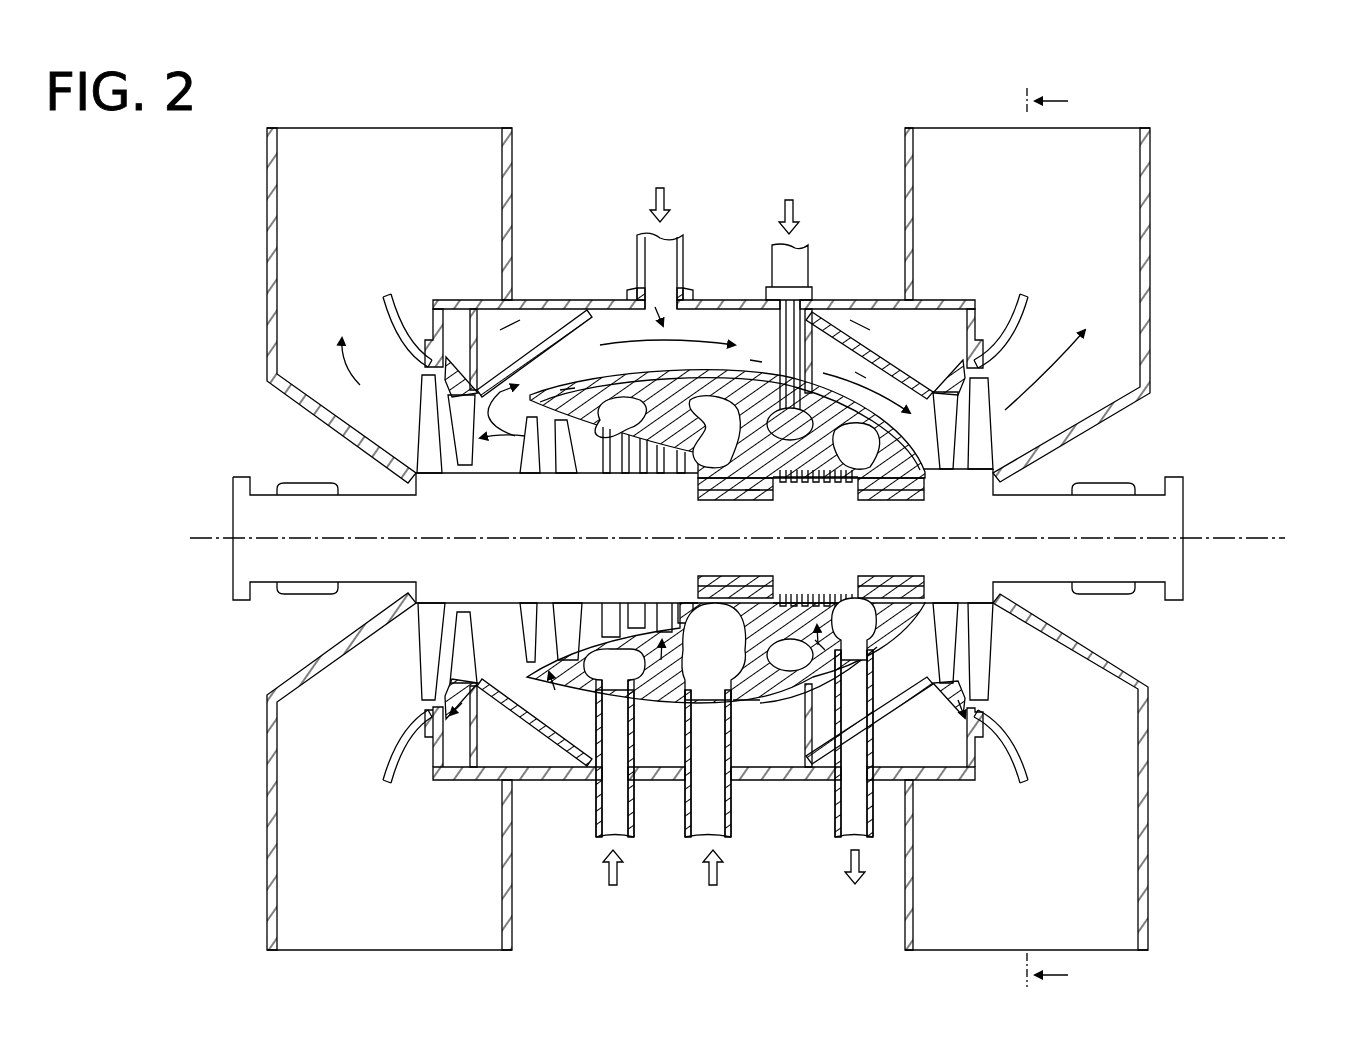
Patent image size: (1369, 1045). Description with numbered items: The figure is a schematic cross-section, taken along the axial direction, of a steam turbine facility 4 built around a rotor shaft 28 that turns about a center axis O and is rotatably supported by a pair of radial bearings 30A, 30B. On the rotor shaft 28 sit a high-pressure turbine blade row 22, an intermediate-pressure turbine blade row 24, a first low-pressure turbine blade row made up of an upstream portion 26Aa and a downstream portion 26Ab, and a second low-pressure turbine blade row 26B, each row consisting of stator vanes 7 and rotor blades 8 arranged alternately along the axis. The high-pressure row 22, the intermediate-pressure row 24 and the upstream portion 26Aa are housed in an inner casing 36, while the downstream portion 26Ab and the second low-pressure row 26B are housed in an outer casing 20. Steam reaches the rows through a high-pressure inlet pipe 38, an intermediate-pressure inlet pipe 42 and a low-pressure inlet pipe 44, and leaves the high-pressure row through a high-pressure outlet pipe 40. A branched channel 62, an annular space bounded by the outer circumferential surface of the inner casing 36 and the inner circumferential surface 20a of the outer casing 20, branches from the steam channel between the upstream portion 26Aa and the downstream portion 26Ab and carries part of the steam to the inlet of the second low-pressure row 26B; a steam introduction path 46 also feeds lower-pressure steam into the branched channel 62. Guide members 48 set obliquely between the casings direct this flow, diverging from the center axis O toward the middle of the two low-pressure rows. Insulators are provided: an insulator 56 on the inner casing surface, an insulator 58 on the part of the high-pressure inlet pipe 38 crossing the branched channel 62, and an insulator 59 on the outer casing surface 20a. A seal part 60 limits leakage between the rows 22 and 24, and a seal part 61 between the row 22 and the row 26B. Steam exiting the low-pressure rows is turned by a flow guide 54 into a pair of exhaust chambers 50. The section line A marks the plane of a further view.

The steam turbine facility 4 is at (1300, 142).
The stator vanes 7 is at (598, 420).
The rotor blades 8 is at (425, 420).
The outer casing 20 is at (548, 393).
The inner circumferential surface of the outer casing 20a is at (710, 305).
The high-pressure turbine blade row 22 is at (828, 635).
The intermediate-pressure turbine blade row 24 is at (661, 665).
The upstream portion of the first low-pressure turbine blade row 26Aa is at (548, 700).
The downstream portion of the first low-pressure turbine blade row 26Ab is at (470, 706).
The second low-pressure turbine blade row 26B is at (955, 712).
The rotor shaft 28 is at (1035, 590).
The radial bearing 30A is at (290, 484).
The radial bearing 30B is at (1110, 484).
The inner casing 36 is at (800, 645).
The high-pressure inlet pipe 38 is at (810, 268).
The high-pressure outlet pipe 40 is at (873, 790).
The intermediate-pressure inlet pipe 42 is at (733, 790).
The low-pressure inlet pipe 44 is at (637, 780).
The steam introduction path 46 is at (690, 255).
The guide members 48 is at (522, 380).
The exhaust chambers 50 is at (302, 124).
The flow guide 54 is at (383, 300).
The insulator 56 is at (605, 395).
The insulator 58 is at (752, 490).
The insulator 59 is at (565, 390).
The seal part 60 is at (755, 360).
The seal part 61 is at (860, 375).
The branched channel 62 is at (576, 371).
The center axis O is at (1268, 528).
The section line A is at (1058, 539).